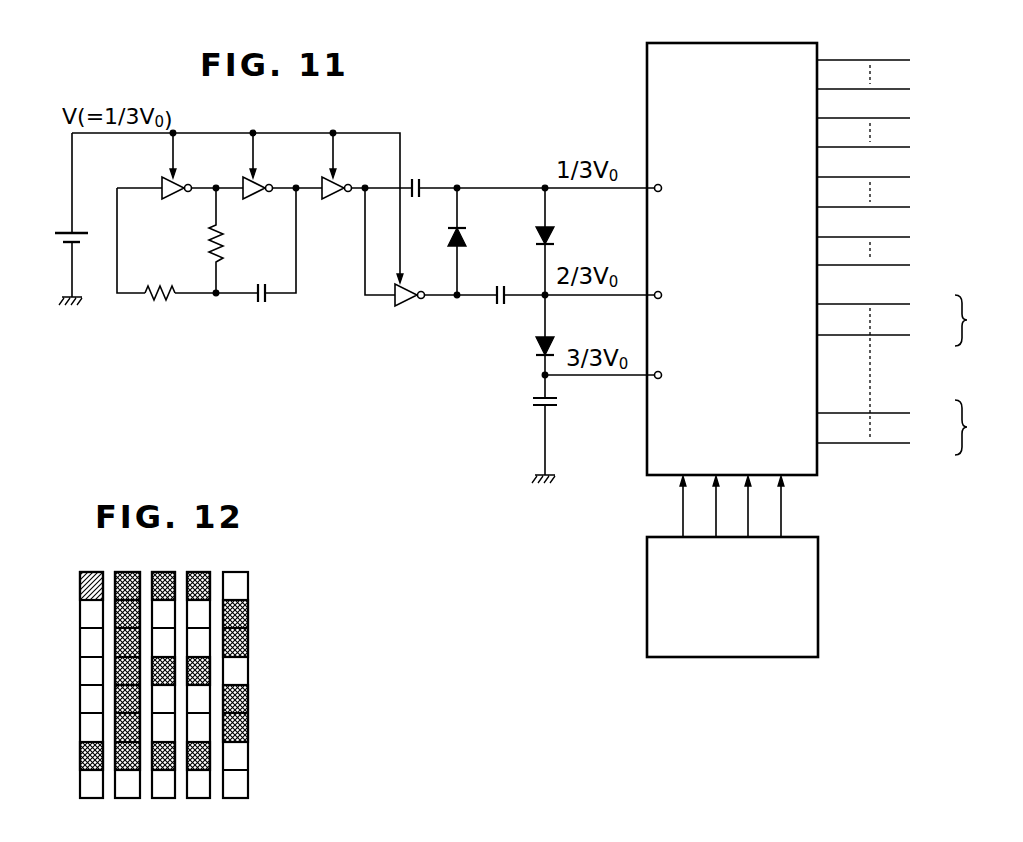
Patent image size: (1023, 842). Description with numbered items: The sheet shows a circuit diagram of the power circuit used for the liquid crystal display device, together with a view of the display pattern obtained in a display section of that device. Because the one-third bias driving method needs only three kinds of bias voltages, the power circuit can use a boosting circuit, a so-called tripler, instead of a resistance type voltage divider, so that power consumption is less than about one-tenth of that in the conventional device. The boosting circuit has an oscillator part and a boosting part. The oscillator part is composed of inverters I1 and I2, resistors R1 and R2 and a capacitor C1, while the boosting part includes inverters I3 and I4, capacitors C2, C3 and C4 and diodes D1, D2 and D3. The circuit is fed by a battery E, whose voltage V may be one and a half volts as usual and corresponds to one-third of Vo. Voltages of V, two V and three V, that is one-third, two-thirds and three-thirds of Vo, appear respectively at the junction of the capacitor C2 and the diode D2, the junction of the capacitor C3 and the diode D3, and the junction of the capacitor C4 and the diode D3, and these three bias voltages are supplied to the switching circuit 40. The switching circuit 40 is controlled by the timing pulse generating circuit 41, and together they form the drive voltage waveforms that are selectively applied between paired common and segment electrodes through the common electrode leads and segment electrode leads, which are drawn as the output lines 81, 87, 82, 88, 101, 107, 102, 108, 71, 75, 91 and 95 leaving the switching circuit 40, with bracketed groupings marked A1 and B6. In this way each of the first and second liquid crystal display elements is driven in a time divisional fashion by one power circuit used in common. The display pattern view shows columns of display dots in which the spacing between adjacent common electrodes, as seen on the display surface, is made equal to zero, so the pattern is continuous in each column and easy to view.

The battery E is at (60, 240).
The inverter I1 is at (170, 199).
The inverter I2 is at (250, 199).
The inverter I3 is at (329, 199).
The inverter I4 is at (403, 306).
The resistor R1 is at (158, 300).
The resistor R2 is at (236, 238).
The capacitor C1 is at (262, 302).
The capacitor C2 is at (400, 194).
The capacitor C3 is at (502, 304).
The capacitor C4 is at (533, 396).
The diode D1 is at (466, 240).
The diode D2 is at (554, 236).
The diode D3 is at (549, 336).
The switching circuit 40 is at (655, 82).
The timing pulse generating circuit 41 is at (818, 562).
The output line 8-1 81 is at (880, 62).
The output line 8-7 87 is at (880, 91).
The output line 8-2 82 is at (880, 120).
The output line 8-8 88 is at (880, 149).
The output line 10-1 101 is at (887, 179).
The output line 10-7 107 is at (887, 209).
The output line 10-2 102 is at (887, 239).
The output line 10-8 108 is at (887, 267).
The output line 7-1 71 is at (881, 306).
The output line 7-5 75 is at (881, 337).
The output line 9-1 91 is at (881, 415).
The output line 9-5 95 is at (881, 445).
The output group A1 is at (976, 320).
The output group B6 is at (976, 427).